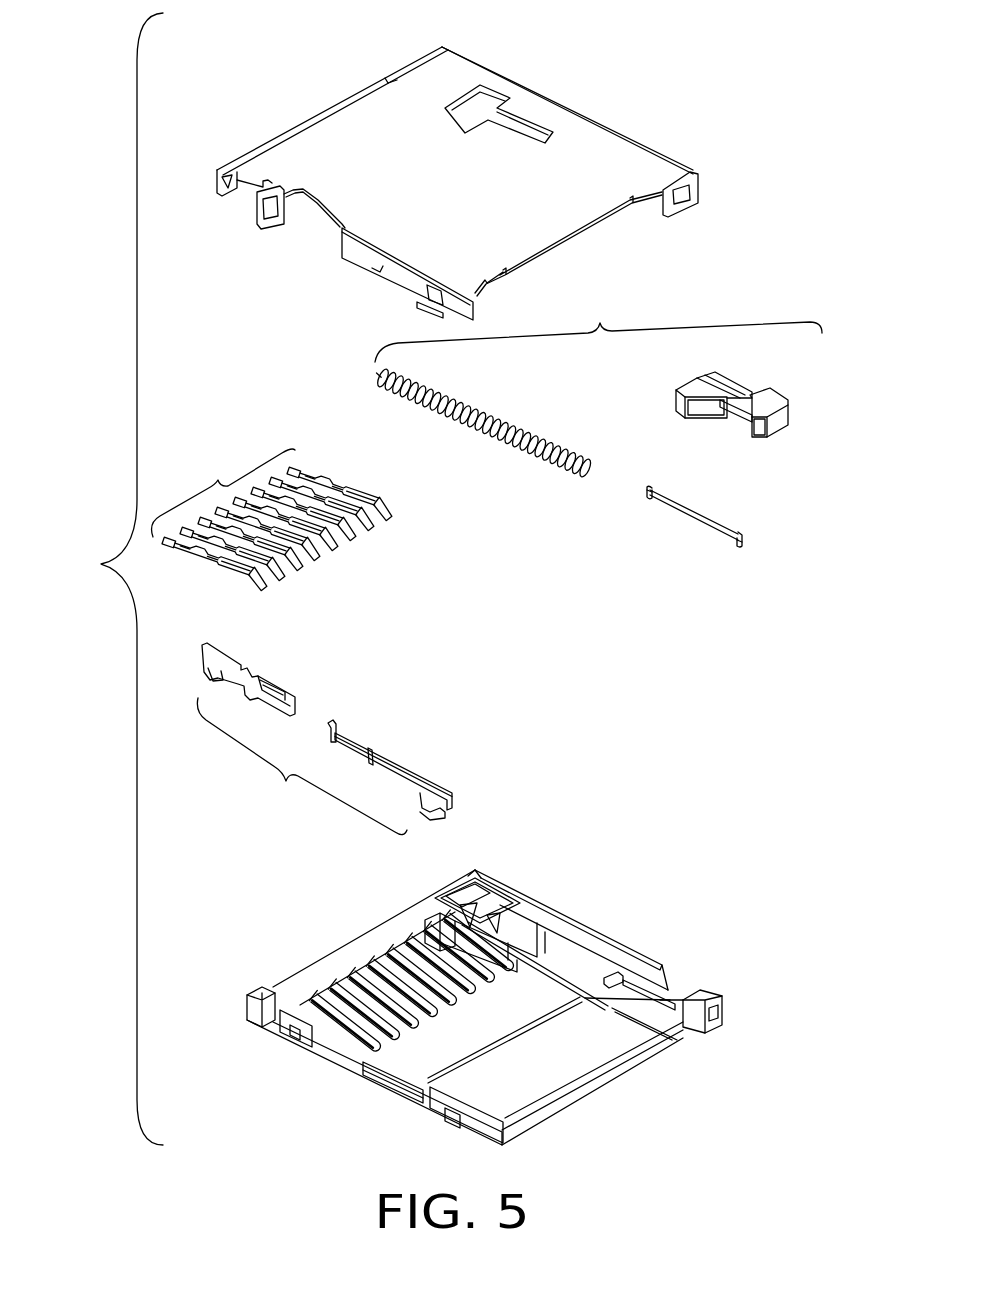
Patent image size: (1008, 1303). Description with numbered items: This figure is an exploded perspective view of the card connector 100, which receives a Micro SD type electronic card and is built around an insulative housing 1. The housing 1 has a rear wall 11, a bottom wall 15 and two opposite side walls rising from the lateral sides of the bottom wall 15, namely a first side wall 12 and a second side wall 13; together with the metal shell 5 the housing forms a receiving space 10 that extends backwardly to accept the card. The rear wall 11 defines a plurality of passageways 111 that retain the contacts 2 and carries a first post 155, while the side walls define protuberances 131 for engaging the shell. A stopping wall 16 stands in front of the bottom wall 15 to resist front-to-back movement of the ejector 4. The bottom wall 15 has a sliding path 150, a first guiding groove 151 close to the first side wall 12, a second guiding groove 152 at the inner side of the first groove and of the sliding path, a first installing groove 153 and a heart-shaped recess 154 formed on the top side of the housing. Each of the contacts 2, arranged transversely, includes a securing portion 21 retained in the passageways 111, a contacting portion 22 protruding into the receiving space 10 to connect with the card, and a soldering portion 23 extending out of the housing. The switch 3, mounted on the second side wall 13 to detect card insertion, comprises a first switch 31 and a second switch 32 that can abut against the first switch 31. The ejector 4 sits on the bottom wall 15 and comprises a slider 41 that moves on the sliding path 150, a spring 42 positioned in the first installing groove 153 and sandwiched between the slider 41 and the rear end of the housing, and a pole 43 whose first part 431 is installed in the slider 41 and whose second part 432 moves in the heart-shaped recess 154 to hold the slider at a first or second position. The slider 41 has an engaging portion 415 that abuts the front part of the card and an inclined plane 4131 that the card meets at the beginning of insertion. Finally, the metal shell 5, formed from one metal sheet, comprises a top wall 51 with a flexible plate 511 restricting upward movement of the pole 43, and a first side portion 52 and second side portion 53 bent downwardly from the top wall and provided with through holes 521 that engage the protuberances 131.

The card connector 100 is at (101, 564).
The insulative housing 1 is at (630, 908).
The receiving space 10 is at (600, 1027).
The rear wall 11 is at (347, 957).
The passageways 111 is at (323, 982).
The first side wall 12 is at (583, 920).
The second side wall 13 is at (408, 1082).
The protuberances 131 is at (447, 1115).
The bottom wall 15 is at (570, 1075).
The sliding path 150 is at (590, 977).
The first guiding groove 151 is at (663, 1000).
The second guiding groove 152 is at (612, 1007).
The first installing groove 153 is at (500, 900).
The heart-shaped recess 154 is at (510, 937).
The first post 155 is at (477, 888).
The stopping wall 16 is at (722, 998).
The contacts 2 is at (287, 501).
The securing portion 21 is at (340, 471).
The contacting portion 22 is at (383, 509).
The soldering portion 23 is at (294, 472).
The switch 3 is at (341, 728).
The first switch 31 is at (263, 660).
The second switch 32 is at (397, 747).
The ejector 4 is at (508, 731).
The slider 41 is at (747, 380).
The engaging portion 415 is at (705, 412).
The inclined plane 4131 is at (765, 430).
The spring 42 is at (518, 412).
The pole 43 is at (720, 500).
The first part 431 is at (733, 538).
The second part 432 is at (645, 493).
The metal shell 5 is at (434, 160).
The top wall 51 is at (430, 67).
The flexible plate 511 is at (483, 103).
The first side portion 52 is at (350, 253).
The through holes 521 is at (262, 217).
The second side portion 53 is at (537, 88).